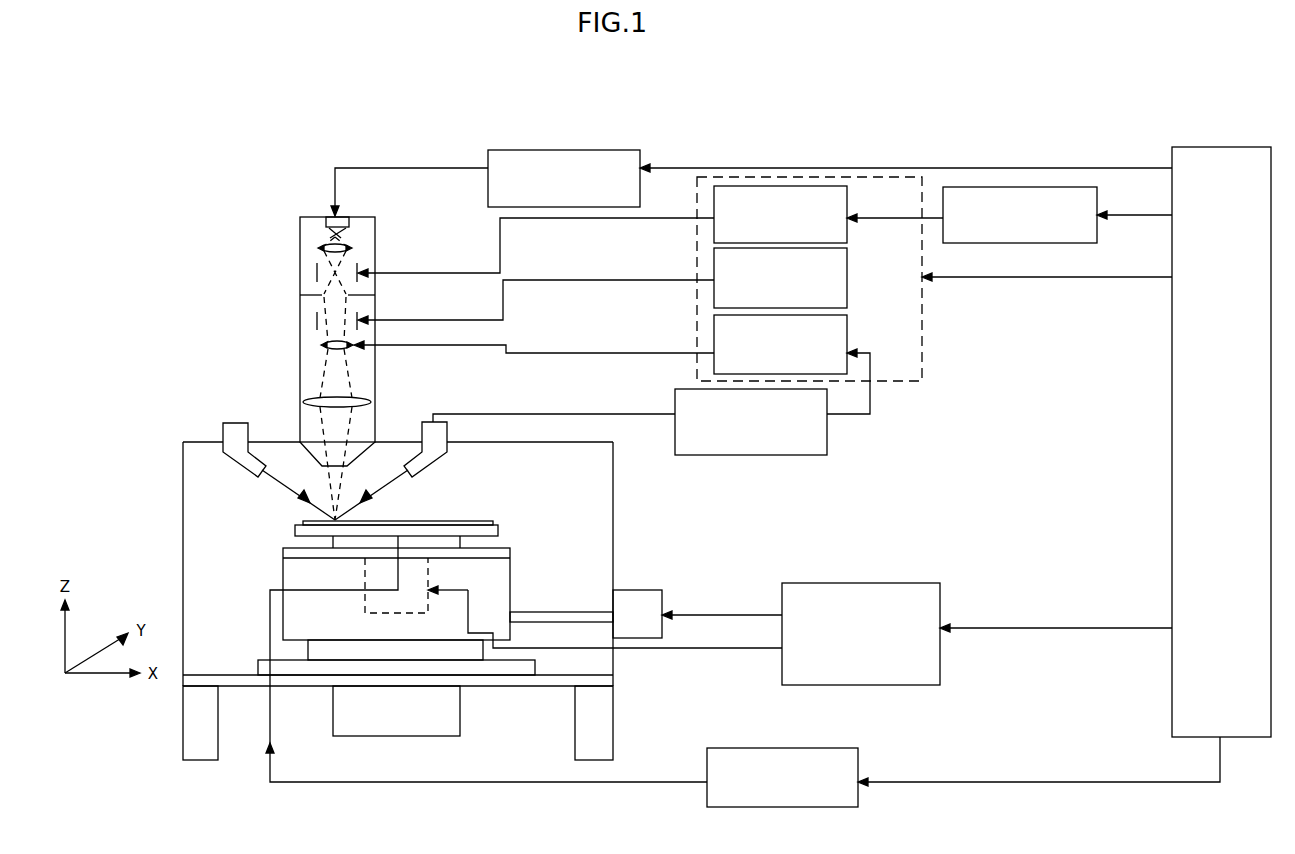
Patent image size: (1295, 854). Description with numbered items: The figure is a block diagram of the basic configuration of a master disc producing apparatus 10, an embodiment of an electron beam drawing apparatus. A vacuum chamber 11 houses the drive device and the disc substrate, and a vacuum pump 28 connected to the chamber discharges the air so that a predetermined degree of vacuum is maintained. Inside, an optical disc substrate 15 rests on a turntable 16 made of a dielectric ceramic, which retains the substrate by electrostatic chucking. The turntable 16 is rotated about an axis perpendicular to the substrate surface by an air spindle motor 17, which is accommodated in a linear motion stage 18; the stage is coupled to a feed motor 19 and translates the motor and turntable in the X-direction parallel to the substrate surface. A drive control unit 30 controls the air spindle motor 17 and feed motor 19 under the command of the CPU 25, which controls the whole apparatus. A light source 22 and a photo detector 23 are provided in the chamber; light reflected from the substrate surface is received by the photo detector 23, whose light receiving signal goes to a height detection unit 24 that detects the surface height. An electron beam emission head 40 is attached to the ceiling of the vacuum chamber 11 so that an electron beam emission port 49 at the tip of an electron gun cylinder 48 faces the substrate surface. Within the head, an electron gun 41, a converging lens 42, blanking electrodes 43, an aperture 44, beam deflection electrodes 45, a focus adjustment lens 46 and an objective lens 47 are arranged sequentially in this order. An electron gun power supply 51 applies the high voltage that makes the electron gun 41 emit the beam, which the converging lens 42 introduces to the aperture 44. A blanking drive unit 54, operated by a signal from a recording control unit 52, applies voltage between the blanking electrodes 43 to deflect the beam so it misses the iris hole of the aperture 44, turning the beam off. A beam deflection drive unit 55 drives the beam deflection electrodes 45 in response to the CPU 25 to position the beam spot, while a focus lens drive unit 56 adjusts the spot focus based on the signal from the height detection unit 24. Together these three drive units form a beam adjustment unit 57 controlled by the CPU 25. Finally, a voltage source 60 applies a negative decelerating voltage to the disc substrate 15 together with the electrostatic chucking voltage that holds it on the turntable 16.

The master disc producing apparatus 10 is at (187, 120).
The vacuum chamber 11 is at (613, 470).
The optical disc substrate 15 is at (435, 521).
The turntable 16 is at (295, 532).
The air spindle motor 17 is at (365, 578).
The linear motion stage 18 is at (283, 580).
The feed motor 19 is at (652, 590).
The light source 22 is at (233, 423).
The photo detector 23 is at (427, 420).
The height detection unit 24 is at (827, 440).
The CPU 25 is at (1172, 147).
The vacuum pump 28 is at (460, 708).
The drive control unit 30 is at (940, 583).
The electron beam emission head 40 is at (300, 223).
The electron gun 41 is at (330, 213).
The converging lens 42 is at (300, 252).
The blanking electrodes 43 is at (300, 278).
The aperture 44 is at (300, 300).
The beam deflection electrodes 45 is at (300, 325).
The focus adjustment lens 46 is at (300, 349).
The objective lens 47 is at (300, 395).
The electron gun cylinder 48 is at (375, 360).
The electron beam emission port 49 is at (347, 467).
The electron gun power supply 51 is at (640, 152).
The recording control unit 52 is at (1098, 243).
The blanking drive unit 54 is at (847, 194).
The beam deflection drive unit 55 is at (847, 277).
The focus lens drive unit 56 is at (847, 329).
The beam adjustment unit 57 is at (697, 240).
The voltage source 60 is at (858, 750).